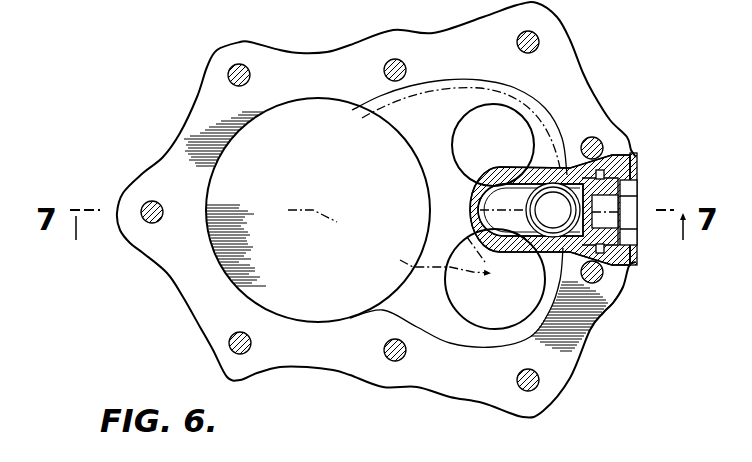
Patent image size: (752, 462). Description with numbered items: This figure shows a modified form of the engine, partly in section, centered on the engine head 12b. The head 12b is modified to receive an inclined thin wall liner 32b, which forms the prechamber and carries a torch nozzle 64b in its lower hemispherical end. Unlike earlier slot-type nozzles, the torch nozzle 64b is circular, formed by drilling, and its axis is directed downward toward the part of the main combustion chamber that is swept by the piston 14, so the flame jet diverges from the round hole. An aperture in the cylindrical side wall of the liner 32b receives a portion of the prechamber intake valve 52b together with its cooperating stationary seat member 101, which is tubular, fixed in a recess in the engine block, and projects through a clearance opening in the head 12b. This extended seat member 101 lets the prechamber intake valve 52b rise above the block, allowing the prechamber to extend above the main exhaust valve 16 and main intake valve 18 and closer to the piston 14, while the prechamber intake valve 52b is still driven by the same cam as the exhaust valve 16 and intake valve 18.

The engine head 12b is at (150, 162).
The piston 14 is at (318, 210).
The exhaust valve 16 is at (493, 145).
The main intake valve 18 is at (495, 279).
The thin wall liner 32b is at (567, 172).
The prechamber intake valve 52b is at (551, 218).
The torch nozzle 64b is at (470, 207).
The seat member 101 is at (595, 304).